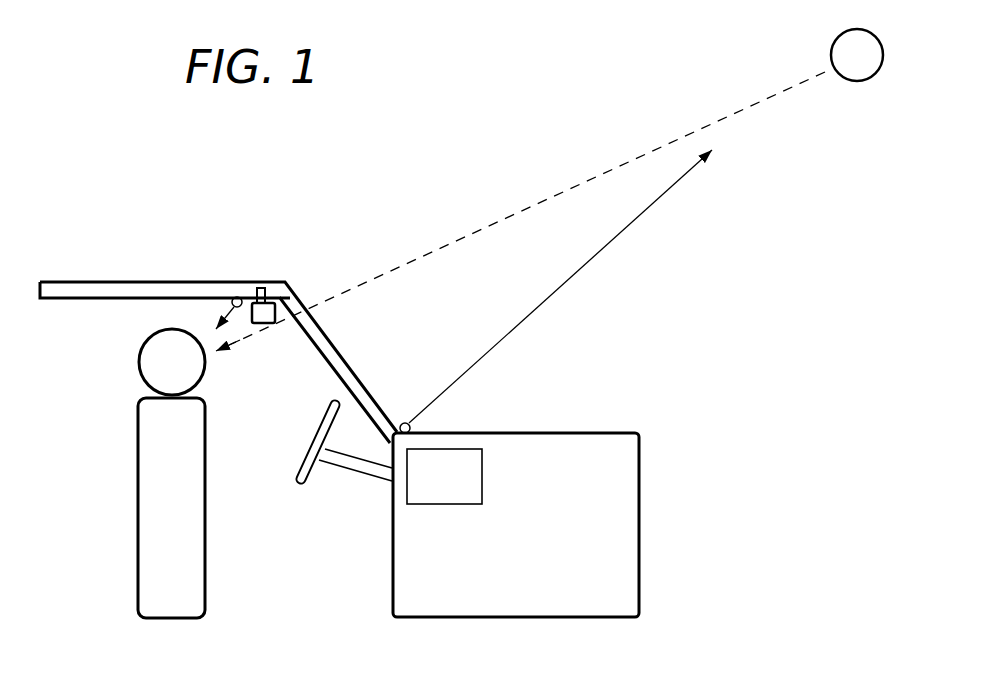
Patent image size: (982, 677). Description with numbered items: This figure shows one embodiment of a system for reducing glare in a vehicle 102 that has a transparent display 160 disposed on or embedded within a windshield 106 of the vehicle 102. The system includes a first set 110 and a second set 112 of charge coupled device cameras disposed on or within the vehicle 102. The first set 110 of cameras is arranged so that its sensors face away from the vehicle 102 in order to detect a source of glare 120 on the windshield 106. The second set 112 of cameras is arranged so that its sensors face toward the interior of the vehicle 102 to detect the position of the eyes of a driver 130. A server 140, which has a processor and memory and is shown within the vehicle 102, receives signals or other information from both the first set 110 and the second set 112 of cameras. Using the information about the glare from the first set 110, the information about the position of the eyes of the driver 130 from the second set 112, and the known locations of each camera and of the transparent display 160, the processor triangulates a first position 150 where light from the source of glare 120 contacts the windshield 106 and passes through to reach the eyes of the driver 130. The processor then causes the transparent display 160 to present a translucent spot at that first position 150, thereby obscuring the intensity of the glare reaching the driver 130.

The vehicle 102 is at (645, 456).
The windshield 106 is at (337, 353).
The first set of CCD cameras 110 is at (413, 428).
The second set of CCD cameras 112 is at (232, 301).
The source of glare 120 is at (843, 33).
The driver 130 is at (143, 462).
The server 140 is at (465, 488).
The first position 150 is at (308, 307).
The transparent display 160 is at (315, 352).